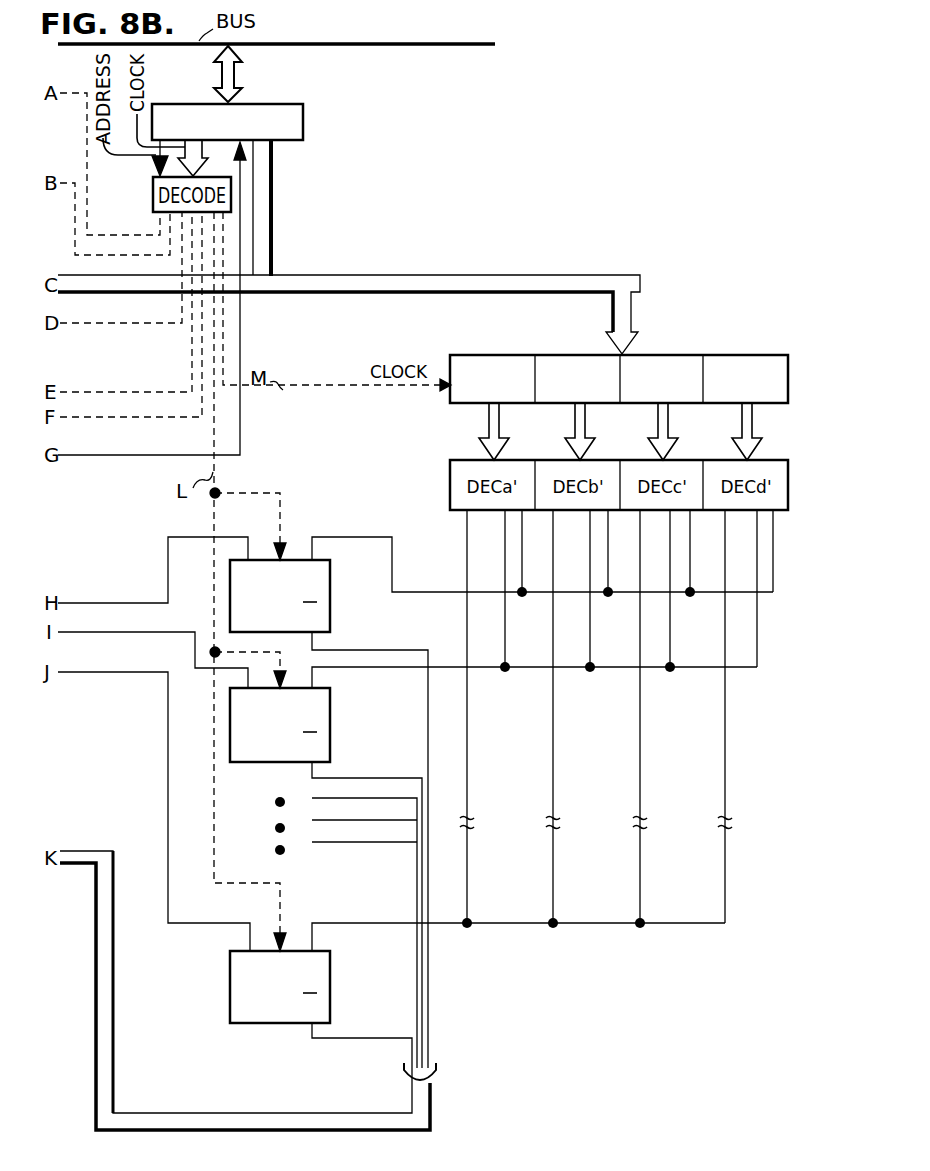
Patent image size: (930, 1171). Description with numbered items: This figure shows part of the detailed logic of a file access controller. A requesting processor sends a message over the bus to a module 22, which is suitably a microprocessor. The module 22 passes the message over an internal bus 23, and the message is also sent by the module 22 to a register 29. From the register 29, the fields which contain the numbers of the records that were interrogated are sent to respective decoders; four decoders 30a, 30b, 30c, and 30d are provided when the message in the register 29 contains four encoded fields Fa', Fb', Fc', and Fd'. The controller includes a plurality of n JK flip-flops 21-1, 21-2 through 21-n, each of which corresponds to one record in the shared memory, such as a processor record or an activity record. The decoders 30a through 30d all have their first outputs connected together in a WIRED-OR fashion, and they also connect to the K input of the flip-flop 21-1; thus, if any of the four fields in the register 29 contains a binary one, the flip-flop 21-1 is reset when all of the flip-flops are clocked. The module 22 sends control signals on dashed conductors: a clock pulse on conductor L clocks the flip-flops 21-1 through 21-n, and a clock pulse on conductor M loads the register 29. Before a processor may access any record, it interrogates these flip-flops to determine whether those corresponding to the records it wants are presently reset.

The module 22 is at (304, 114).
The internal bus 23 is at (276, 217).
The register 29 is at (664, 354).
The decoder 30a is at (470, 458).
The decoder 30b is at (556, 458).
The decoder 30c is at (640, 458).
The decoder 30d is at (724, 458).
The flip-flop 21-1 is at (331, 590).
The flip-flop 21-2 is at (331, 718).
The flip-flop 21-n is at (331, 972).